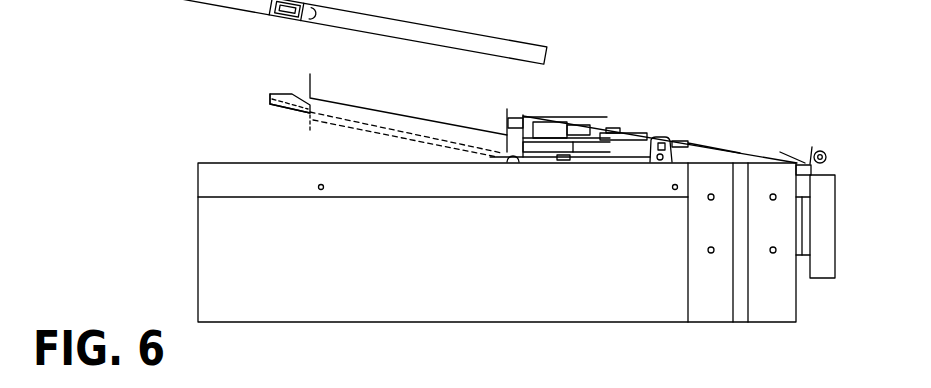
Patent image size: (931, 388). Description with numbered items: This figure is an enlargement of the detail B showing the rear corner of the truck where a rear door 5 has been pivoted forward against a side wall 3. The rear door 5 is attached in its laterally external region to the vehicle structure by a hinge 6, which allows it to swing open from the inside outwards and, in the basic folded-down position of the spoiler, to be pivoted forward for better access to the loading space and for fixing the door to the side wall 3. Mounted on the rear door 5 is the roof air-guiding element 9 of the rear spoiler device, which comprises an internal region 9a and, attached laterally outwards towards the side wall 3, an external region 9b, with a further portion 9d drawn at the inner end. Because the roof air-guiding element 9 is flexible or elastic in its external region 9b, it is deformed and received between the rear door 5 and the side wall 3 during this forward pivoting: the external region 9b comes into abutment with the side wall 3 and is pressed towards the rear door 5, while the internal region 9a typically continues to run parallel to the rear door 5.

The side wall 3 is at (239, 173).
The rear door 5 is at (460, 88).
The hinge 6 is at (805, 147).
The roof air-guiding element 9 is at (293, 100).
The internal region 9a is at (366, 118).
The external region 9b is at (628, 160).
The support strip 9d is at (307, 110).
The detail B is at (174, 209).